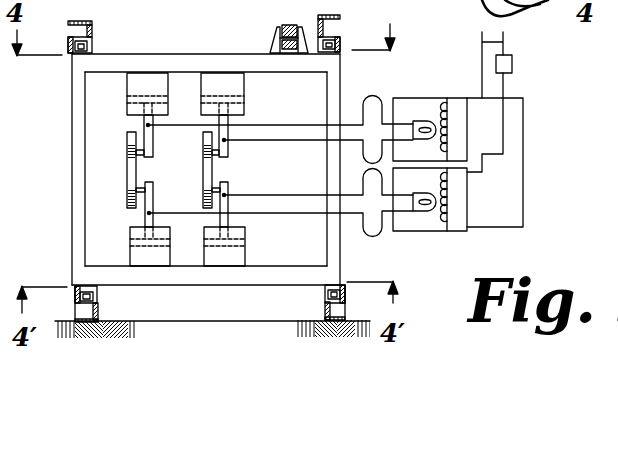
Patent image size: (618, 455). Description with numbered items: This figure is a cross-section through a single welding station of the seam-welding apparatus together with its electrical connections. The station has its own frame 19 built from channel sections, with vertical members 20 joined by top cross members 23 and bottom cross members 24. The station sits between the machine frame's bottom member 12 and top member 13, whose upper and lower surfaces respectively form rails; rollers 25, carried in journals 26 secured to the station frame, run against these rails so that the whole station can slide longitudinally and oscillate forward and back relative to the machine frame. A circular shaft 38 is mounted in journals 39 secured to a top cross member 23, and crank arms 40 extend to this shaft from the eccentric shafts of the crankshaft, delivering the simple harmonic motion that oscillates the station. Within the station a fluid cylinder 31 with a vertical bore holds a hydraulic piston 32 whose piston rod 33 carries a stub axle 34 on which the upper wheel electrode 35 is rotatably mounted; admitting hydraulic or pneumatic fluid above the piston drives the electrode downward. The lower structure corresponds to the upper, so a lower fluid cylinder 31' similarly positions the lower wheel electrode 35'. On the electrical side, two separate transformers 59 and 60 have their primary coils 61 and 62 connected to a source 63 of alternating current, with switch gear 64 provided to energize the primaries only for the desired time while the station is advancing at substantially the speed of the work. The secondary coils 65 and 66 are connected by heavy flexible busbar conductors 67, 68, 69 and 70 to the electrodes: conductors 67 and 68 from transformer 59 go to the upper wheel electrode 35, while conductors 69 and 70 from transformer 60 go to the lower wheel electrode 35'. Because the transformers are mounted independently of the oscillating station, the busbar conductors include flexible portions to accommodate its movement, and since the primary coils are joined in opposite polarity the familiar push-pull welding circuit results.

The bottom member 12 is at (98, 312).
The top member 13 is at (89, 22).
The frame 19 is at (123, 53).
The vertical members 20 is at (72, 171).
The top cross members 23 is at (182, 61).
The bottom cross members 24 is at (217, 276).
The rollers 25 is at (78, 38).
The journals 26 is at (72, 47).
The fluid cylinder 31 is at (185, 94).
The fluid cylinder 31' is at (187, 246).
The hydraulic piston 32 is at (127, 97).
The piston rod 33 is at (153, 142).
The stub axle 34 is at (139, 156).
The wheel electrode 35 is at (153, 166).
The wheel electrode 35' is at (160, 204).
The circular shaft 38 is at (289, 25).
The journals 39 is at (268, 45).
The crank arms 40 is at (295, 25).
The transformer 59 is at (421, 98).
The transformer 60 is at (419, 232).
The primary coil 61 is at (451, 129).
The primary coil 62 is at (452, 200).
The source of alternating current electrical power 63 is at (482, 42).
The switch gear 64 is at (510, 68).
The secondary coil 65 is at (420, 121).
The secondary coil 66 is at (423, 193).
The busbar conductor 67 is at (362, 118).
The busbar conductor 68 is at (362, 141).
The busbar conductor 69 is at (362, 193).
The busbar conductor 70 is at (362, 215).